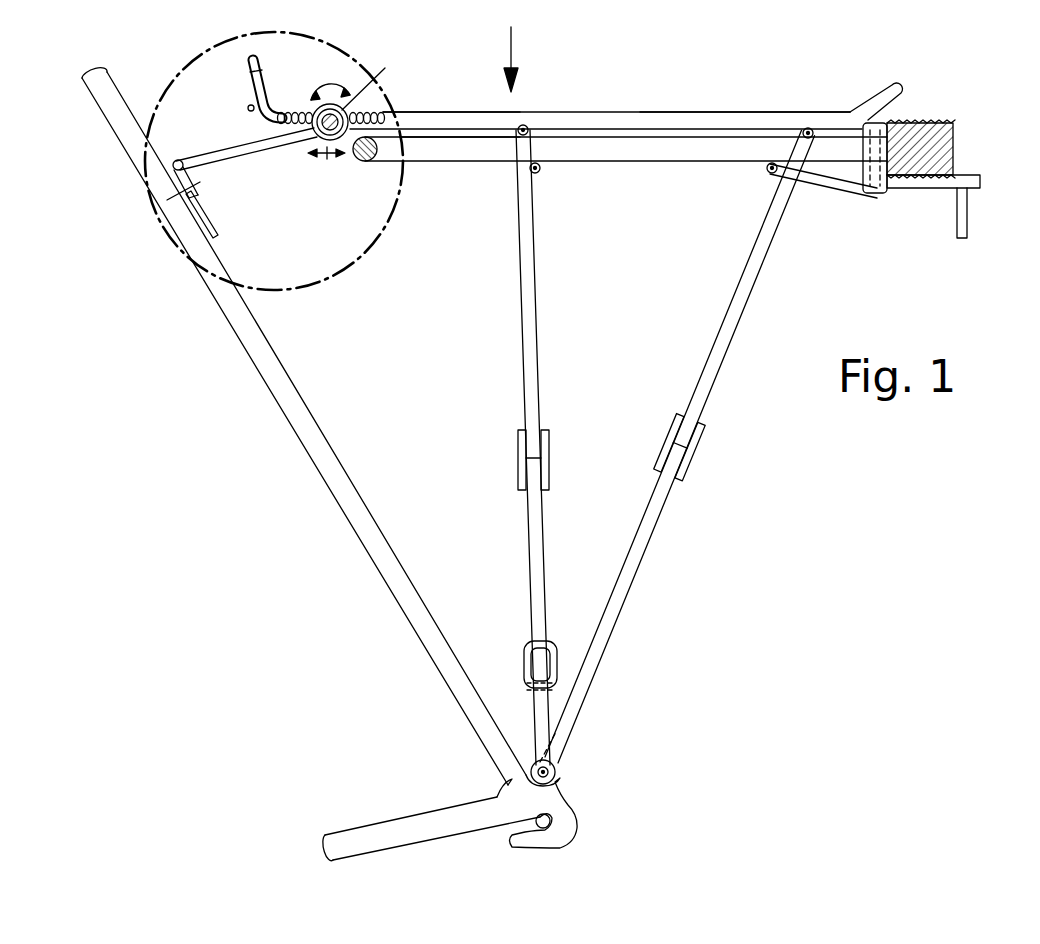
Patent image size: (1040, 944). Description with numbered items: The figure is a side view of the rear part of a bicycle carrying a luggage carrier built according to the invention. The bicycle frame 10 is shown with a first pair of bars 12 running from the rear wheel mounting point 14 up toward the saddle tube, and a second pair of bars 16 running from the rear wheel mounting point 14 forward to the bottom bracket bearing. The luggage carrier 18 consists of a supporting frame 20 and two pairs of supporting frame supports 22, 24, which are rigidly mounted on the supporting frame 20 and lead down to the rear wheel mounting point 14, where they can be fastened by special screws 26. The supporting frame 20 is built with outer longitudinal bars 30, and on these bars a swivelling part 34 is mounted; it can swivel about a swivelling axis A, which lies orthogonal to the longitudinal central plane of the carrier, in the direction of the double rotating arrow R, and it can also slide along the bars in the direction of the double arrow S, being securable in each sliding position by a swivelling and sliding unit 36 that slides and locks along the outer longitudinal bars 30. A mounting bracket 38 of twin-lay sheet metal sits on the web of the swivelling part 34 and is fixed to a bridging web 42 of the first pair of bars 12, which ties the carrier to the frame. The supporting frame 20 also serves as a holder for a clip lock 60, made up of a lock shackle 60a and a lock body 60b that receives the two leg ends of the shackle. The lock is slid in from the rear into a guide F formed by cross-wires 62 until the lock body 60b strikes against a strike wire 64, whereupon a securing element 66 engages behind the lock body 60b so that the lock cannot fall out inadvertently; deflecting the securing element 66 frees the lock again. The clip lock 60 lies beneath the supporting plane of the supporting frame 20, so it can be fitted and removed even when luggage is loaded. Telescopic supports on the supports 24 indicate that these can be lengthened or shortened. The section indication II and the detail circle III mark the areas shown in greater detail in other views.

The bicycle frame 10 is at (353, 542).
The first pair of bars 12 is at (327, 472).
The rear wheel mounting point 14 is at (572, 810).
The second pair of bars 16 is at (423, 817).
The luggage carrier 18 is at (654, 110).
The supporting frame 20 is at (707, 112).
The first pair of supporting frame supports 22 is at (537, 318).
The second pair of supporting frame supports 24 is at (733, 318).
The special screws 26 is at (557, 772).
The outer longitudinal bars 30 is at (436, 110).
The swivelling part 34 is at (254, 150).
The swivelling and sliding unit 36 is at (310, 108).
The mounting bracket 38 is at (176, 148).
The bridging web 42 is at (210, 214).
The clip lock 60 is at (640, 162).
The lock shackle 60a is at (447, 162).
The lock body 60b is at (938, 142).
The cross-wires 62 is at (538, 165).
The strike wire 64 is at (862, 196).
The securing element 66 is at (962, 176).
The swivelling axis A is at (371, 82).
The double rotating arrow R is at (332, 88).
The double arrow S is at (326, 157).
The guide F is at (542, 172).
The section line II is at (516, 59).
The detail circle III is at (357, 272).